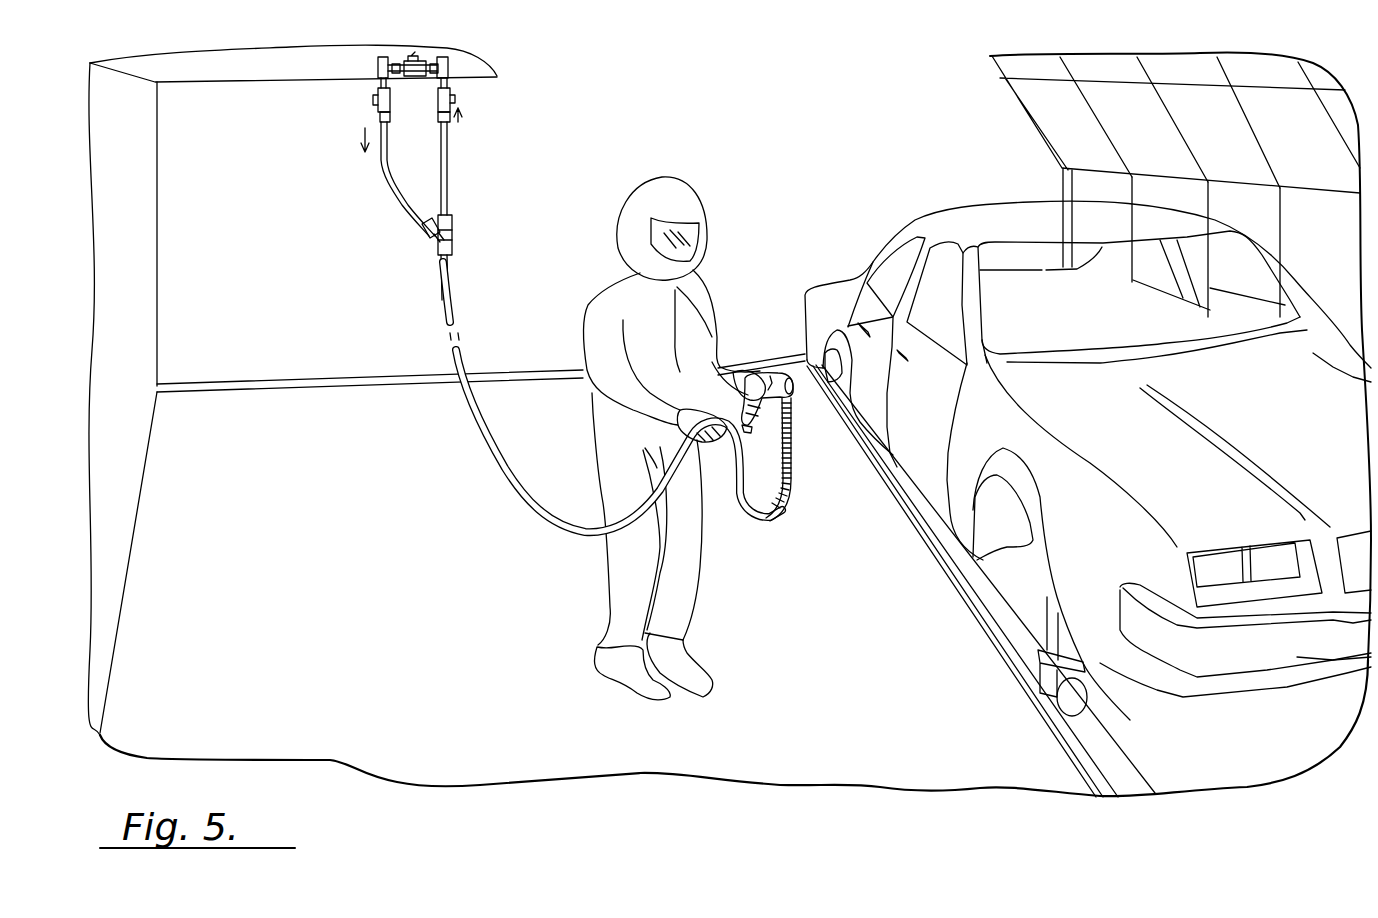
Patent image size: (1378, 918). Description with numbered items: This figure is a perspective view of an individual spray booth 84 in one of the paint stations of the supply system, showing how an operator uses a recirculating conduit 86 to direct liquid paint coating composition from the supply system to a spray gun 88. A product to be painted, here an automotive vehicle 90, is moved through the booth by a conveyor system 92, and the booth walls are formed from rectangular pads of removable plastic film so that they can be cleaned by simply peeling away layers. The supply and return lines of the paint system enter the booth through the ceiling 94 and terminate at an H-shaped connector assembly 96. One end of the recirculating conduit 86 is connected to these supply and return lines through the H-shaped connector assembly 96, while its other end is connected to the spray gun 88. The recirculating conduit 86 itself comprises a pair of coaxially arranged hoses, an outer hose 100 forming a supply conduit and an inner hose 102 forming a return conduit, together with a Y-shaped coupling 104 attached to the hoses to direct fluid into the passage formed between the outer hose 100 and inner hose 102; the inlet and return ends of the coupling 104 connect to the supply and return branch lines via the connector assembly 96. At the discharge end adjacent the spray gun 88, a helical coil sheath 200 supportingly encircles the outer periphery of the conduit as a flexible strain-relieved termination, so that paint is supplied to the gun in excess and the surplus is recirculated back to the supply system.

The spray booth 84 is at (545, 802).
The recirculating conduit 86 is at (472, 507).
The spray gun 88 is at (757, 372).
The automotive vehicle 90 is at (960, 206).
The conveyor system 92 is at (1068, 742).
The ceiling 94 is at (212, 72).
The H-shaped connector assembly 96 is at (447, 82).
The outer hose 100 is at (408, 205).
The inner hose 102 is at (448, 175).
The Y-shaped coupling 104 is at (452, 238).
The helical coil sheath 200 is at (792, 493).